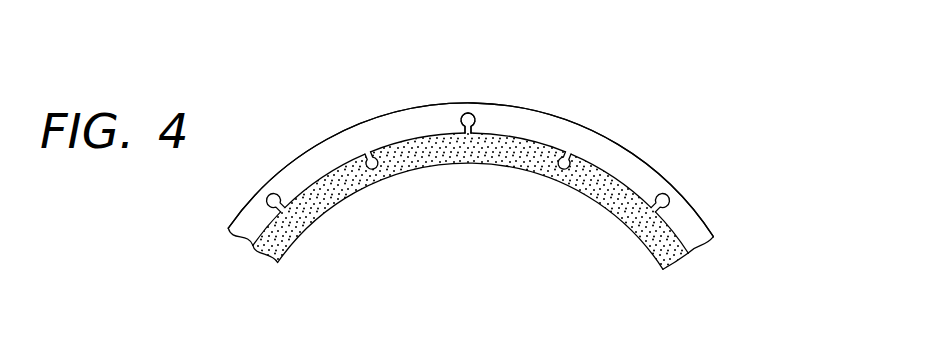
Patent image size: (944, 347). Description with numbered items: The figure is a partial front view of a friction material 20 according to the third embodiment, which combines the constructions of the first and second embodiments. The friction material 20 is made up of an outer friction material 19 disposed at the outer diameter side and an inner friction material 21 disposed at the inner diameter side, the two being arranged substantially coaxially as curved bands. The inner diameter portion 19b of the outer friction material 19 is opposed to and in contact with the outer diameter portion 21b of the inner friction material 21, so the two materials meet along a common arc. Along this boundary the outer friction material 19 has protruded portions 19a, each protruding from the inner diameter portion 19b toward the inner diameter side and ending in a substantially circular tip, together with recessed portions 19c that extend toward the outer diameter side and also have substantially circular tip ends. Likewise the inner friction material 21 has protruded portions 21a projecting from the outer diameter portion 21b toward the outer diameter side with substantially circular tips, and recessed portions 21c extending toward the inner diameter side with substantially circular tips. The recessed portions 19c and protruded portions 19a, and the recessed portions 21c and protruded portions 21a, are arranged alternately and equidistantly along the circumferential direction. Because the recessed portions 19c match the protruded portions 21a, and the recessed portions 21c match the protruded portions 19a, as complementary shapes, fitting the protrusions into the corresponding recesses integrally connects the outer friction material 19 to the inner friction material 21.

The outer friction material 19 is at (278, 188).
The protruded portion 19a is at (383, 161).
The inner diameter portion 19b is at (608, 173).
The recessed portion 19c is at (478, 118).
The friction material 20 is at (709, 145).
The inner friction material 21 is at (327, 198).
The protruded portion 21a is at (468, 115).
The outer diameter portion 21b is at (622, 182).
The recessed portion 21c is at (357, 137).